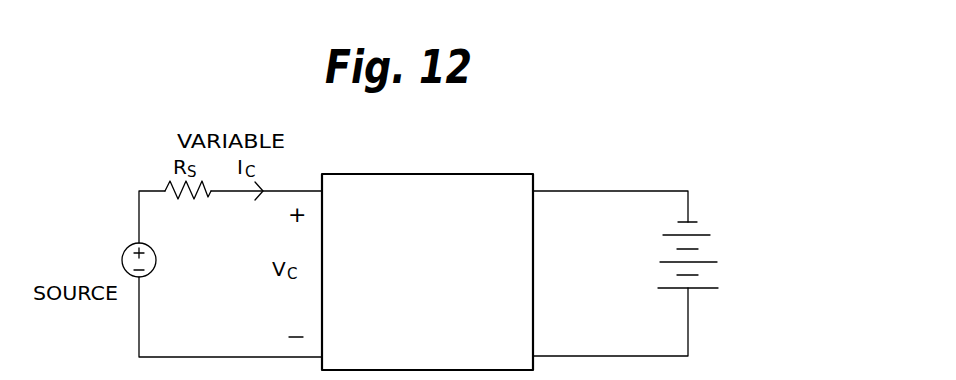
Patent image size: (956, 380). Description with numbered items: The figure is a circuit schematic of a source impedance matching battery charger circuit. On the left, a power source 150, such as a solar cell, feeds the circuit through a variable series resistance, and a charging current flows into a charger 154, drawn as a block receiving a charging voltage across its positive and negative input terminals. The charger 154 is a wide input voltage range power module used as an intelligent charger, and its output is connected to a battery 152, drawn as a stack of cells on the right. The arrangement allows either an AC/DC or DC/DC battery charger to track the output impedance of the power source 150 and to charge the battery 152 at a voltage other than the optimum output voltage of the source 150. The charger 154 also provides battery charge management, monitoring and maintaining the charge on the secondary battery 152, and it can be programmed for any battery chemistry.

The power source 150 is at (126, 250).
The battery 152 is at (760, 243).
The charger 154 is at (438, 193).